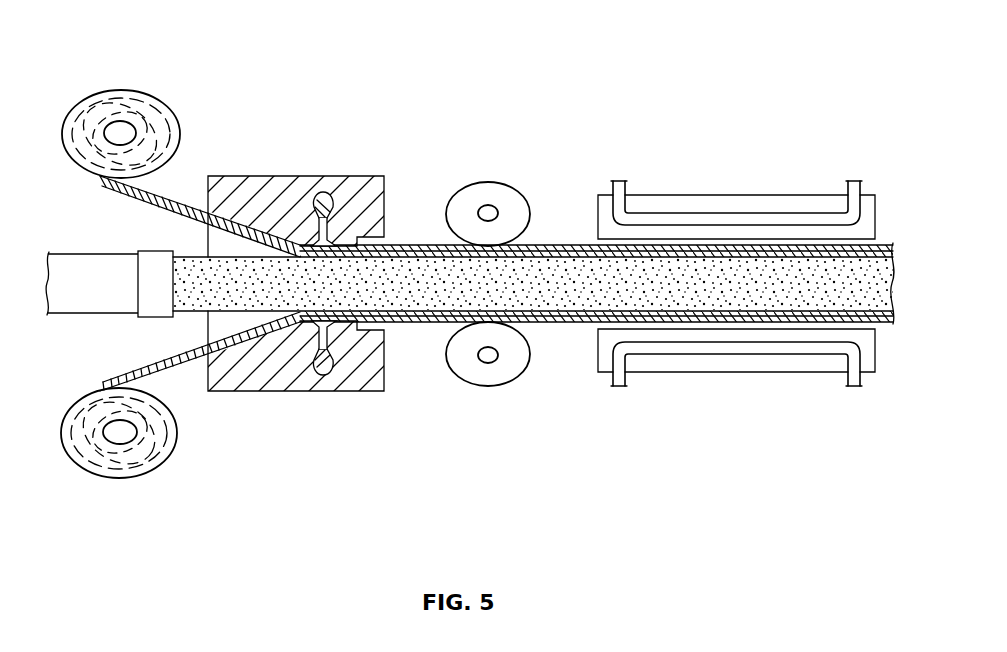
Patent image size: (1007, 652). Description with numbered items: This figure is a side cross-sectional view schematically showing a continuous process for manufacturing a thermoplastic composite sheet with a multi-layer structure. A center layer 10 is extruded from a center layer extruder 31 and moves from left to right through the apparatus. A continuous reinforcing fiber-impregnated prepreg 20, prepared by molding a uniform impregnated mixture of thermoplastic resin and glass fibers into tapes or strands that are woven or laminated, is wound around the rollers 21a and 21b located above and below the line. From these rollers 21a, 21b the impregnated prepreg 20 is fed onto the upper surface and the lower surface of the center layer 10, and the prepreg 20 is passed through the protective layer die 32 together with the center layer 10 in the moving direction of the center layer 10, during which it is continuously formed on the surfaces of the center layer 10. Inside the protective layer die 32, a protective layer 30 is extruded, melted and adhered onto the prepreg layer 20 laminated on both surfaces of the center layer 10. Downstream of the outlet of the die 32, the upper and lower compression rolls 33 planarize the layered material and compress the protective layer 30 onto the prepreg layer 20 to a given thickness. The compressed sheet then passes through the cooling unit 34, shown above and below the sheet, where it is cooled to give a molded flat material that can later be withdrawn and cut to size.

The center layer 10 is at (553, 277).
The continuous reinforcing fiber-impregnated prepreg 20 is at (176, 197).
The roller 21a is at (119, 130).
The roller 21b is at (120, 436).
The protective layer 30 is at (428, 245).
The center layer extruder 31 is at (93, 258).
The protective layer die 32 is at (322, 190).
The compression roll 33 is at (488, 185).
The cooling unit 34 is at (732, 205).